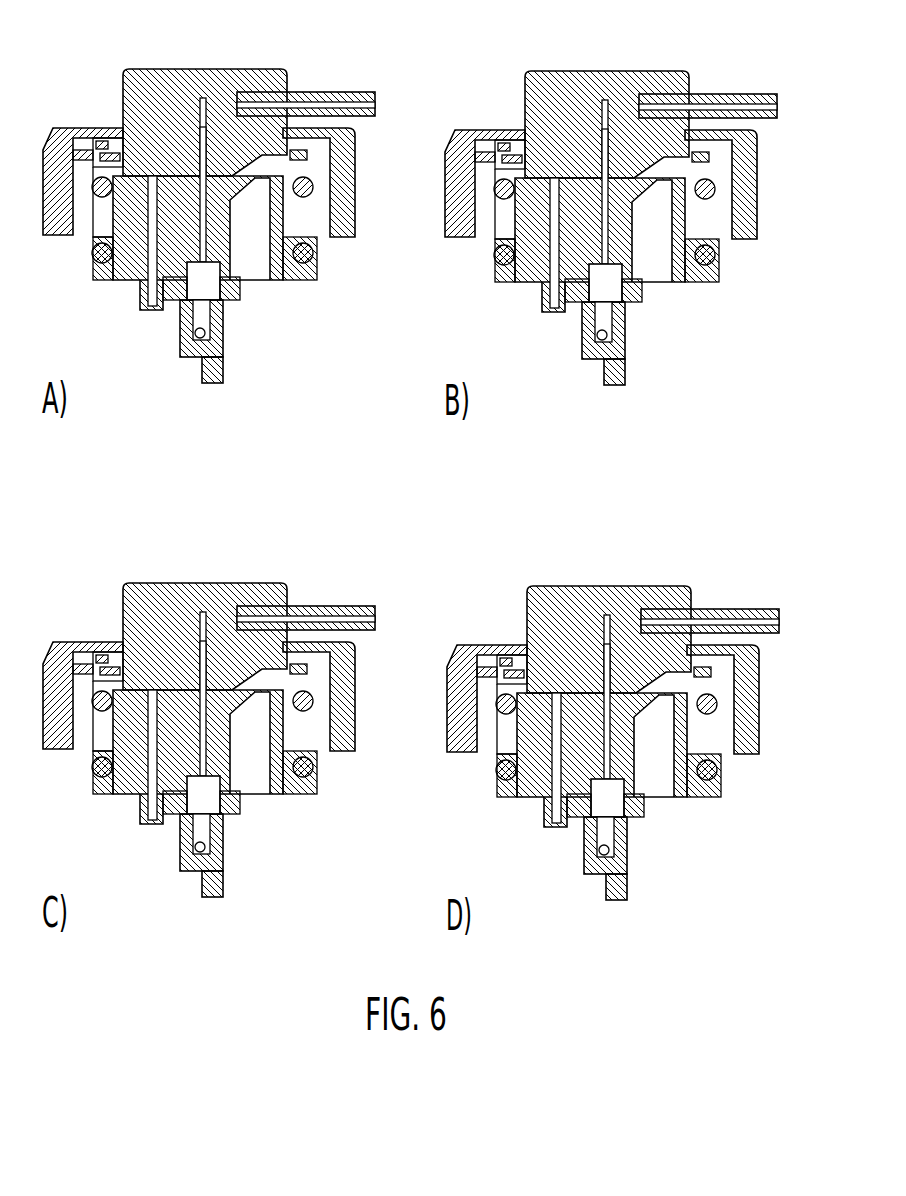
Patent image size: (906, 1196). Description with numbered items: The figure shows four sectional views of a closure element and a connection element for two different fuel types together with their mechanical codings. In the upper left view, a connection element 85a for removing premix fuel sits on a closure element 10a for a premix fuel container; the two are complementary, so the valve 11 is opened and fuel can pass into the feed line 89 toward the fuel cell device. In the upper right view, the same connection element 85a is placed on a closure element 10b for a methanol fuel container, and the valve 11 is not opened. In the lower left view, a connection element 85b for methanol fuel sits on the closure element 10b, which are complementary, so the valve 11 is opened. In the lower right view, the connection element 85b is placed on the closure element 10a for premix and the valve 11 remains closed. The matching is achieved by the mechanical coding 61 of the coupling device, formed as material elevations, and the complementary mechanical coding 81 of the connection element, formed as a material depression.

The connection element for premix fuel 85a is at (150, 76).
The connection element for methanol fuel 85b is at (150, 590).
The feed line 89 is at (338, 92).
The mechanical coding of the coupling device 61 is at (102, 127).
The mechanical coding of the connection element 81 is at (504, 129).
The closure element for premix fuel container 10a is at (118, 281).
The closure element for methanol fuel container 10b is at (520, 283).
The valve 11 is at (227, 318).